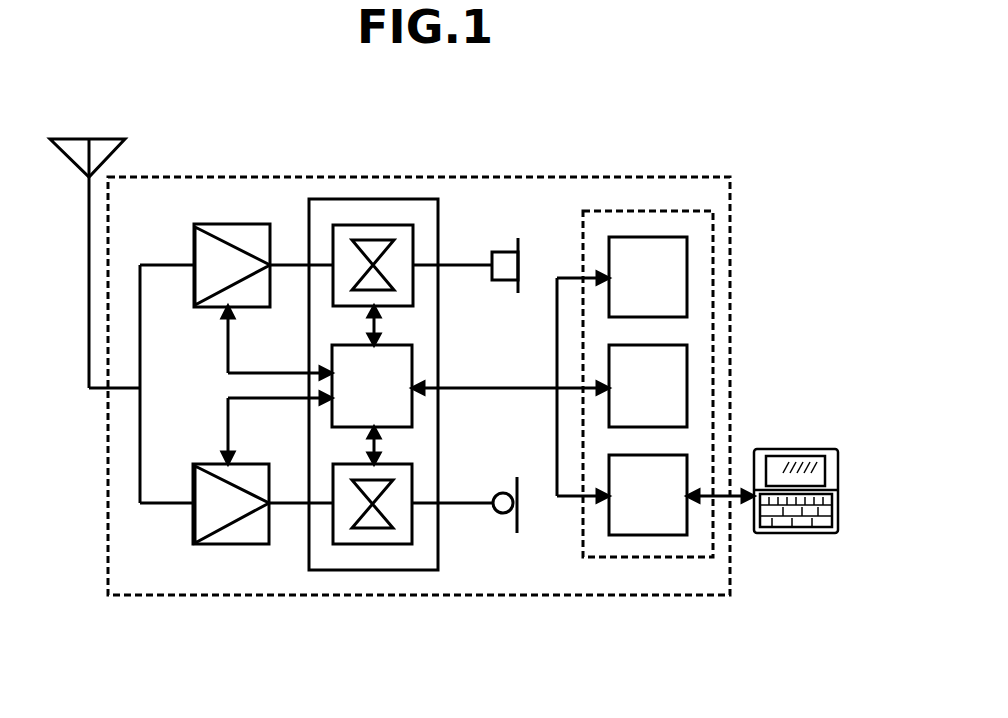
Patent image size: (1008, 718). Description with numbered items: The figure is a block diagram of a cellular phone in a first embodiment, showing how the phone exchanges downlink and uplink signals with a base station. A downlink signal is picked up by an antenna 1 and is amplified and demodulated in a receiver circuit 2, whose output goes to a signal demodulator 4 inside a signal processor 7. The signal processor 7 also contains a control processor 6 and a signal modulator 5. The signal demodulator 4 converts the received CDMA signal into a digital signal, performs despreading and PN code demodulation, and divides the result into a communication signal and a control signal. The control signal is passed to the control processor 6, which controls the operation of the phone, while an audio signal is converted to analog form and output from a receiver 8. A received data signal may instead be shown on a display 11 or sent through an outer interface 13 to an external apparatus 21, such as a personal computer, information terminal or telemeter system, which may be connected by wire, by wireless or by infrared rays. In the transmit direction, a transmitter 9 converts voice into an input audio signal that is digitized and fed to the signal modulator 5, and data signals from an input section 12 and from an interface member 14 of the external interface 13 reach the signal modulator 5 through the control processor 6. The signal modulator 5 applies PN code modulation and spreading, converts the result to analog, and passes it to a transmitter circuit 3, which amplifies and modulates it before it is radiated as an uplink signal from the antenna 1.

The antenna 1 is at (117, 137).
The receiver circuit 2 is at (250, 224).
The transmitter circuit 3 is at (228, 545).
The signal demodulator 4 is at (403, 225).
The signal modulator 5 is at (370, 545).
The control processor 6 is at (412, 360).
The signal processor 7 is at (342, 199).
The receiver 8 is at (518, 238).
The transmitter 9 is at (500, 514).
The display 11 is at (674, 237).
The input section 12 is at (687, 367).
The external interface 13 is at (658, 535).
The interface member 14 is at (612, 211).
The external apparatus 21 is at (780, 533).